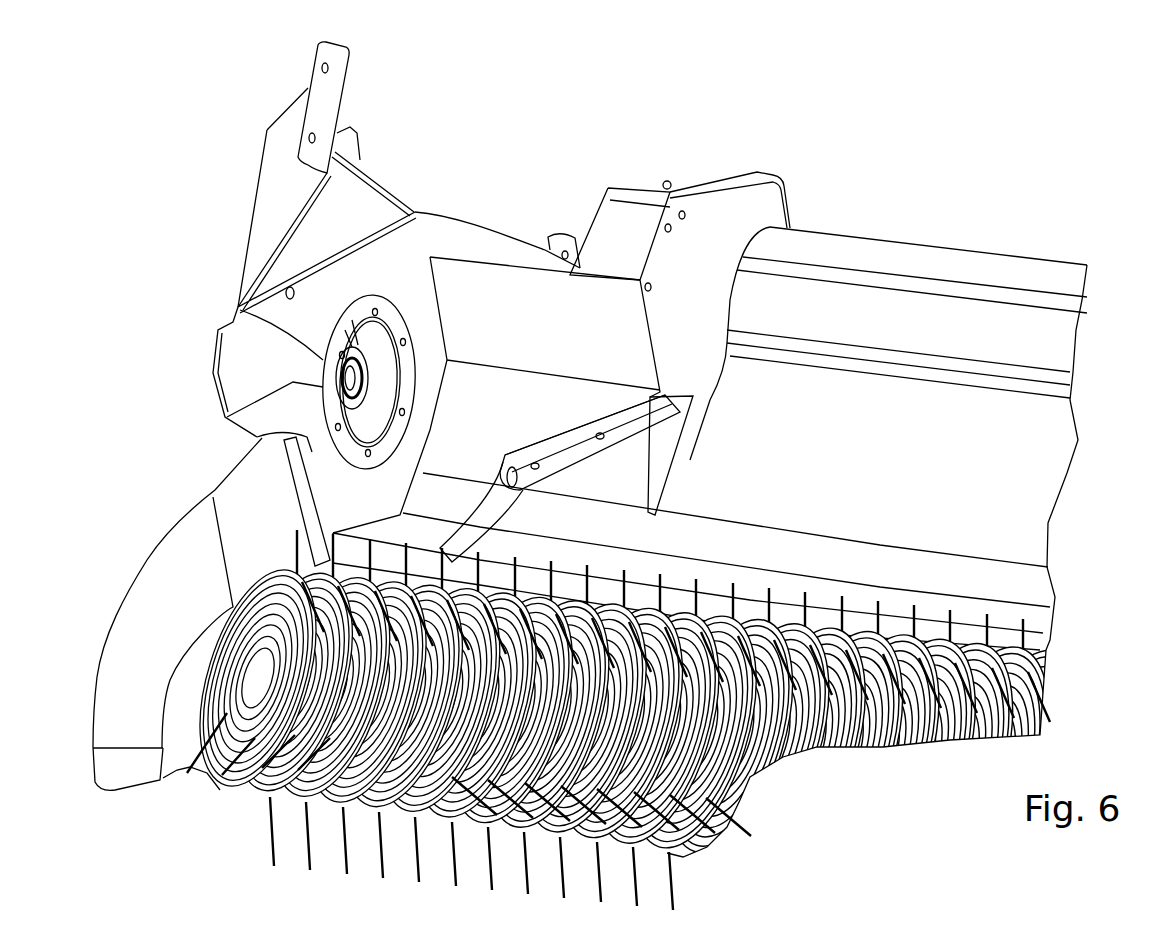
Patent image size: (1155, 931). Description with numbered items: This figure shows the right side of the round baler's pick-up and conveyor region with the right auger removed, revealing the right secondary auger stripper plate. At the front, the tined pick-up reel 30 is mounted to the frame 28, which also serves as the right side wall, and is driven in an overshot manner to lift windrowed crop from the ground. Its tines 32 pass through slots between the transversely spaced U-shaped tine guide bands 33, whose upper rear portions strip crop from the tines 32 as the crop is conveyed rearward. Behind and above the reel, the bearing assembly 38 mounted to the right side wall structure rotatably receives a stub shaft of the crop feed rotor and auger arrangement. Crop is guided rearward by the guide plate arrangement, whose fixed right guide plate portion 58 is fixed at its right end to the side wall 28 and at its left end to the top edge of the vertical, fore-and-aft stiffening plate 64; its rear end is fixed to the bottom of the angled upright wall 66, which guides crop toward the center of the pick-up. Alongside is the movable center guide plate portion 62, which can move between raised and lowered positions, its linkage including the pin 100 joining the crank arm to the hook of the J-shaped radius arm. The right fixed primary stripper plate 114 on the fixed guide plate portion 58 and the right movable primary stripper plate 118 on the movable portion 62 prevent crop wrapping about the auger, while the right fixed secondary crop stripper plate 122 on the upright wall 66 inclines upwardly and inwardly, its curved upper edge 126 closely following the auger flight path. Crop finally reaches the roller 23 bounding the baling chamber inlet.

The roller 23 is at (927, 253).
The frame 28 is at (262, 240).
The tined pick-up reel 30 is at (230, 857).
The tines 32 is at (210, 772).
The U-shaped tine guide bands 33 is at (363, 817).
The bearing assembly 38 is at (337, 367).
The right guide plate portion 58 is at (388, 502).
The movable center guide plate portion 62 is at (890, 386).
The stiffening plate 64 is at (450, 517).
The angled upright wall 66 is at (513, 322).
The pin 100 is at (627, 450).
The right fixed primary stripper plate 114 is at (300, 513).
The right movable primary stripper plate 118 is at (513, 553).
The right fixed secondary crop stripper plate 122 is at (560, 433).
The upper edge 126 is at (613, 403).